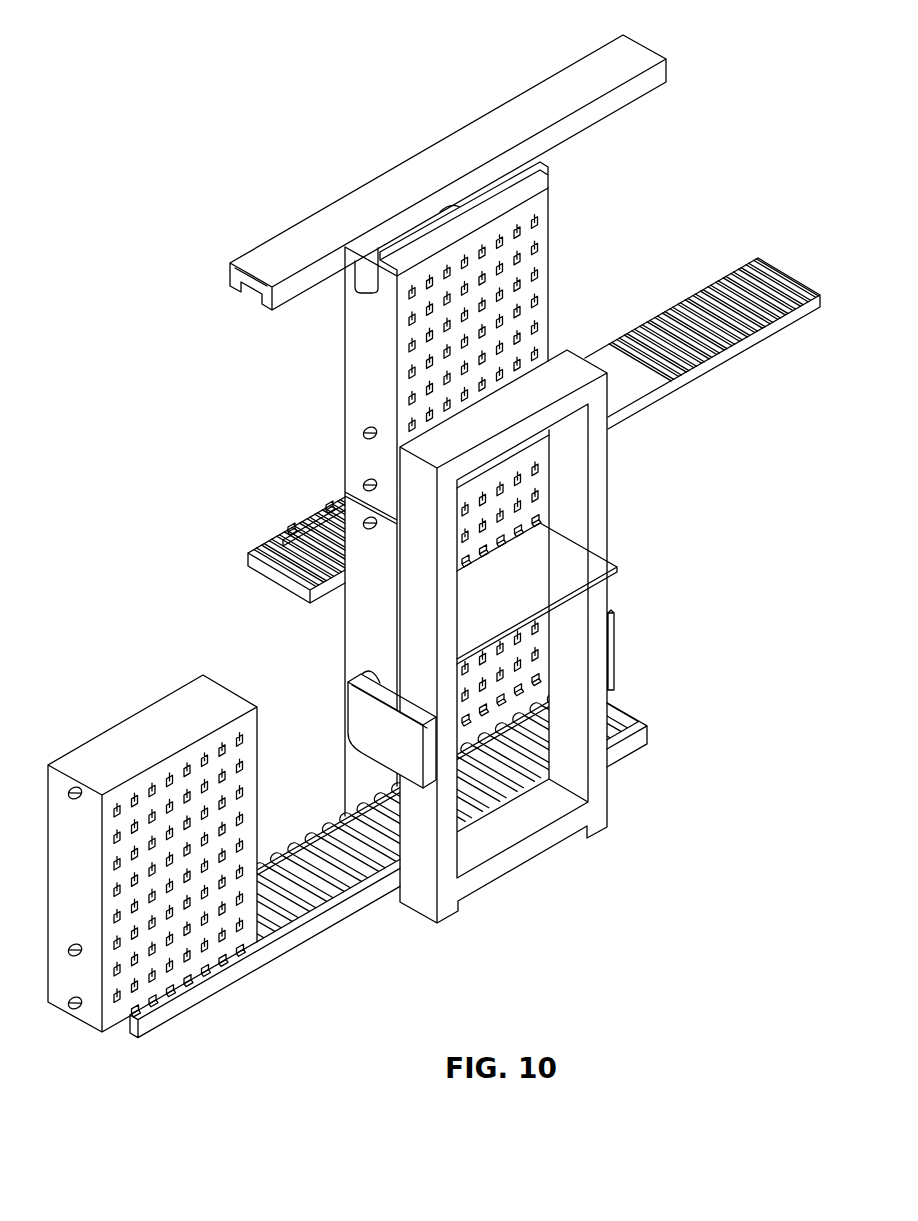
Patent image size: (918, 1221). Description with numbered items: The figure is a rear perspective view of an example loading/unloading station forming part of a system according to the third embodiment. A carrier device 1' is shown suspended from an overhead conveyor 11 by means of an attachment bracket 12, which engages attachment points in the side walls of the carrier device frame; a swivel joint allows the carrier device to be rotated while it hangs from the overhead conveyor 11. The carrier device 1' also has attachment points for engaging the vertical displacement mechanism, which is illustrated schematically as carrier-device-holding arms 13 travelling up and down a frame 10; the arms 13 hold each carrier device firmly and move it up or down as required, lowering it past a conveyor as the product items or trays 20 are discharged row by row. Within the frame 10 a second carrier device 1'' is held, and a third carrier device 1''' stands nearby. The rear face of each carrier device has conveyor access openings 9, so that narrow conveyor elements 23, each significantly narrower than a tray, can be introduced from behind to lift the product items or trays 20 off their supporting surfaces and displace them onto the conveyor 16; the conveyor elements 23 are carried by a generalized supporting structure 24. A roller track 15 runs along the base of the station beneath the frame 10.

The overhead conveyor 11 is at (553, 92).
The carrier device 1' is at (442, 488).
The conveyor access openings 9 is at (546, 298).
The attachment bracket 12 is at (365, 277).
The conveyor 16 is at (748, 317).
The conveyor elements 23 is at (524, 531).
The product items or trays 20 is at (327, 525).
The frame 10 is at (600, 482).
The supporting structure 24 is at (617, 571).
The carrier device 1'' is at (585, 568).
The carrier device 1''' is at (152, 833).
The carrier-device-holding arms 13 is at (364, 717).
The roller conveyor 15 is at (287, 905).